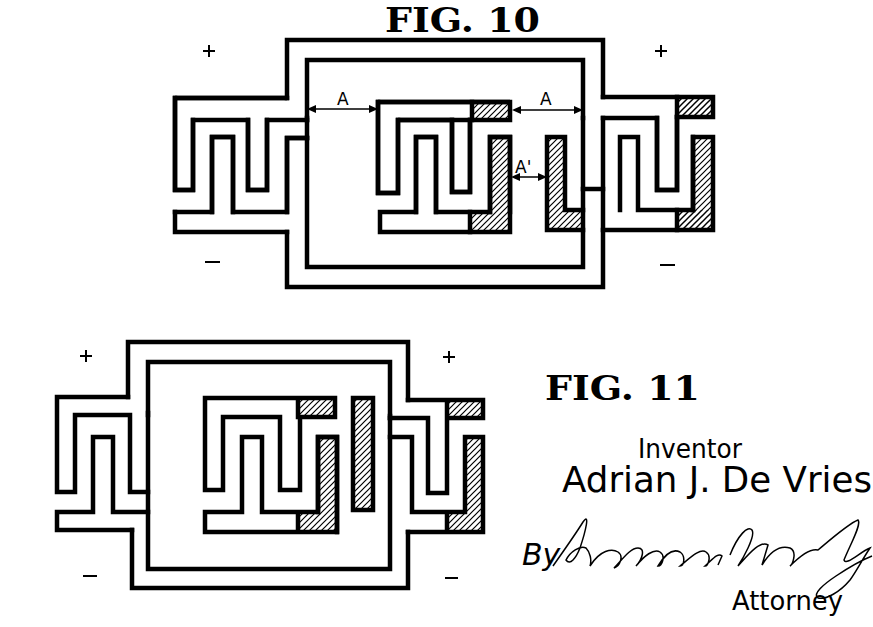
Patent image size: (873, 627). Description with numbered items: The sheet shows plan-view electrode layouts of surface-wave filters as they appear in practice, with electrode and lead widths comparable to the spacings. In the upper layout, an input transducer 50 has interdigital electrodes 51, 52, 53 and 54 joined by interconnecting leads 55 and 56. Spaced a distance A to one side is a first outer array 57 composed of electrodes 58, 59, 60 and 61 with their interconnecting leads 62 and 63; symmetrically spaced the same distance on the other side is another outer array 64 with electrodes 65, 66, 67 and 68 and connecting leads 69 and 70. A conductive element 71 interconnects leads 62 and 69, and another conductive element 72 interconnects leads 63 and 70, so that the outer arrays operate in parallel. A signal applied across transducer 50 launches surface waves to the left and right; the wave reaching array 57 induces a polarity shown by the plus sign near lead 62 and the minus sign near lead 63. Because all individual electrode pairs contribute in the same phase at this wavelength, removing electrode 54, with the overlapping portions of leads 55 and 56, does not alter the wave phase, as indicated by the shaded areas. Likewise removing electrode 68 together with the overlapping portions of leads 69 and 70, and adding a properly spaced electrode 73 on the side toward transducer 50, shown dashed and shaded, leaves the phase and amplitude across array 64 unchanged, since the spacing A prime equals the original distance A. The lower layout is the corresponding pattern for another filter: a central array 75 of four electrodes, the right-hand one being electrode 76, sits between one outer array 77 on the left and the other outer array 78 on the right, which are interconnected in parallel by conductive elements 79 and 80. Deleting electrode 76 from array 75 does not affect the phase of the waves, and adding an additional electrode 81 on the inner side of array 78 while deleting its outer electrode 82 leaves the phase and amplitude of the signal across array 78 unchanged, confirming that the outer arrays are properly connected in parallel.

In FIG. 10, the input transducer 50 is at (397, 94).
In FIG. 10, the interdigital electrode 51 is at (390, 165).
In FIG. 10, the interdigital electrode 52 is at (425, 180).
In FIG. 10, the interdigital electrode 53 is at (462, 143).
In FIG. 10, the interdigital electrode 54 is at (502, 232).
In FIG. 10, the interconnecting lead 55 is at (428, 110).
In FIG. 10, the interconnecting lead 56 is at (463, 220).
In FIG. 10, the first outer array 57 is at (178, 90).
In FIG. 10, the electrode 58 is at (185, 137).
In FIG. 10, the electrode 59 is at (222, 168).
In FIG. 10, the electrode 60 is at (258, 185).
In FIG. 10, the electrode 61 is at (292, 158).
In FIG. 10, the interconnecting lead 62 is at (243, 100).
In FIG. 10, the interconnecting lead 63 is at (215, 222).
In FIG. 10, the outer array 64 is at (706, 83).
In FIG. 10, the electrode 65 is at (590, 143).
In FIG. 10, the electrode 66 is at (628, 160).
In FIG. 10, the electrode 67 is at (665, 158).
In FIG. 10, the electrode 68 is at (713, 165).
In FIG. 10, the connecting lead 69 is at (653, 107).
In FIG. 10, the connecting lead 70 is at (670, 223).
In FIG. 10, the conductive element 71 is at (360, 52).
In FIG. 10, the conductive element 72 is at (437, 277).
In FIG. 10, the additional electrode 73 is at (570, 222).
In FIG. 11, the central array 75 is at (282, 390).
In FIG. 11, the electrode 76 is at (326, 503).
In FIG. 11, the outer array 77 is at (78, 405).
In FIG. 11, the outer array 78 is at (487, 390).
In FIG. 11, the conductive element 79 is at (247, 352).
In FIG. 11, the conductive element 80 is at (272, 580).
In FIG. 11, the additional electrode 81 is at (365, 398).
In FIG. 11, the outer electrode 82 is at (477, 459).